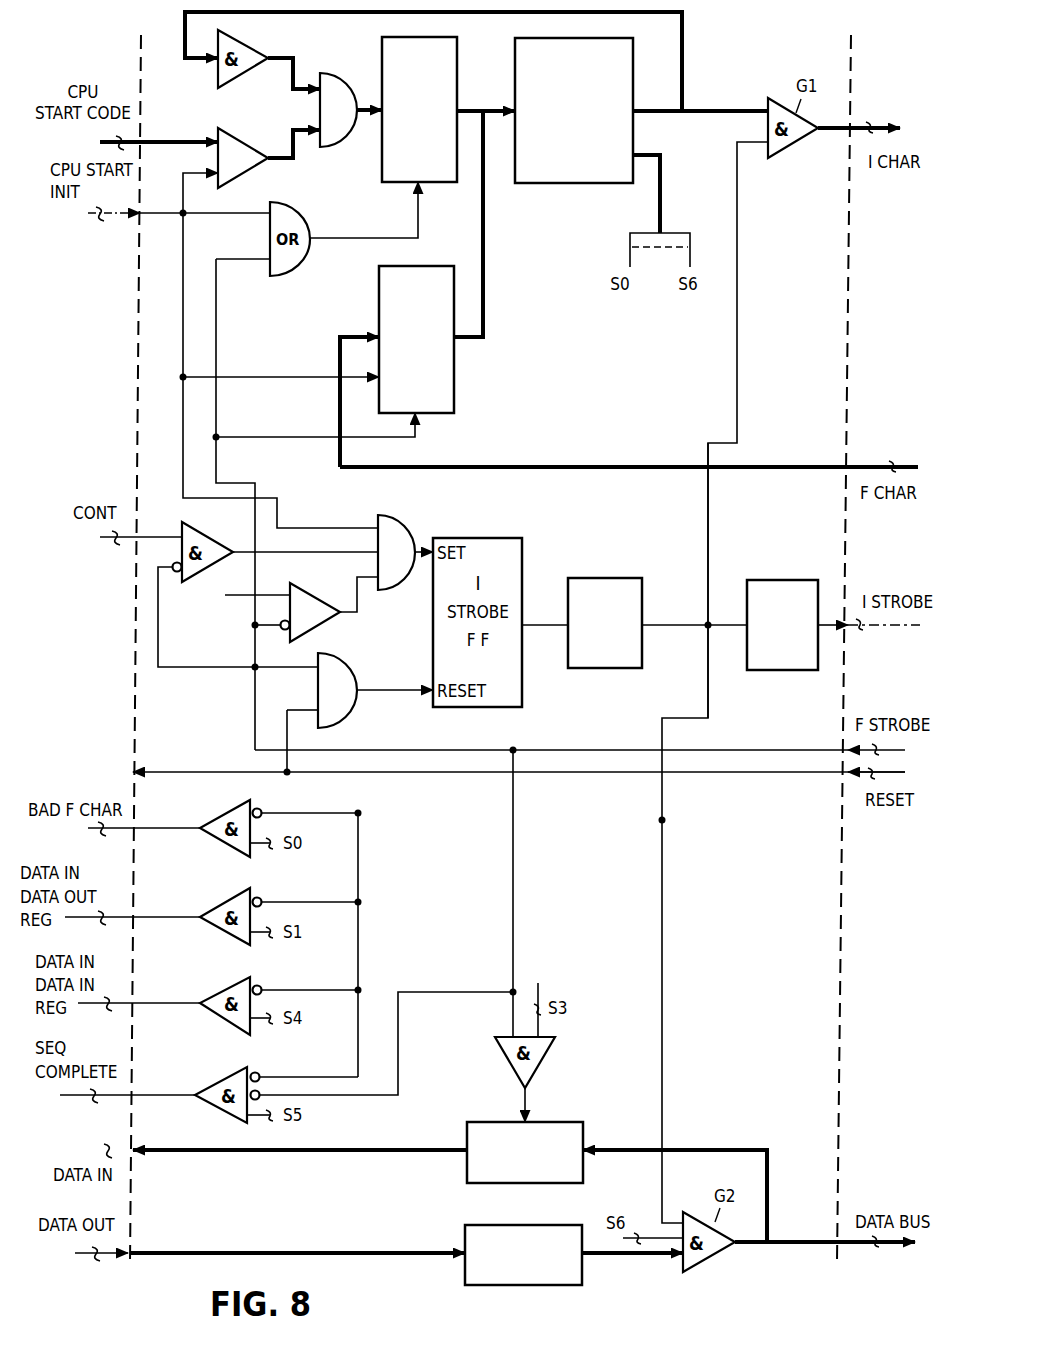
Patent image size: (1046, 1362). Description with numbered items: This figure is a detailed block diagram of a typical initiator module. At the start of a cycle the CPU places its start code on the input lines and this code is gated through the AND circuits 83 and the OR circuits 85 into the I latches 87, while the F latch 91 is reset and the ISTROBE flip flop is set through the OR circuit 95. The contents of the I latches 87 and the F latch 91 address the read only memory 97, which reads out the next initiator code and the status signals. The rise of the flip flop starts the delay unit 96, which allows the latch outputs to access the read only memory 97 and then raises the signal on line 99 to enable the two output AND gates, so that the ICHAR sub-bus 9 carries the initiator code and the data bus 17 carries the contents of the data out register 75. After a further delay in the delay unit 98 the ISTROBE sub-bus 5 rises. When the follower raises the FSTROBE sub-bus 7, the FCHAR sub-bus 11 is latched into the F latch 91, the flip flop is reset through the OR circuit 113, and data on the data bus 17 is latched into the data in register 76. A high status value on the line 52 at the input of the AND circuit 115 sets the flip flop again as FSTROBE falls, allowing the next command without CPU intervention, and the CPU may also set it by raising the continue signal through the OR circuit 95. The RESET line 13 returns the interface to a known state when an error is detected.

The AND circuits 83 is at (240, 138).
The OR circuits 85 is at (352, 84).
The I latches 87 is at (458, 53).
The read only memory 97 is at (634, 59).
The F latch 91 is at (436, 266).
The OR circuit 95 is at (398, 520).
The AND circuit 115 is at (321, 600).
The OR circuit 113 is at (352, 668).
The delay unit 96 is at (632, 578).
The delay unit 98 is at (794, 580).
The line 99 is at (708, 528).
The FCHAR sub-bus 11 is at (830, 466).
The ICHAR sub-bus 9 is at (838, 127).
The ISTROBE sub-bus 5 is at (893, 624).
The FSTROBE sub-bus 7 is at (812, 750).
The RESET line 13 is at (798, 772).
The data in register 76 is at (560, 1122).
The data out register 75 is at (540, 1225).
The data bus 17 is at (817, 1241).
The control line 52 is at (233, 594).